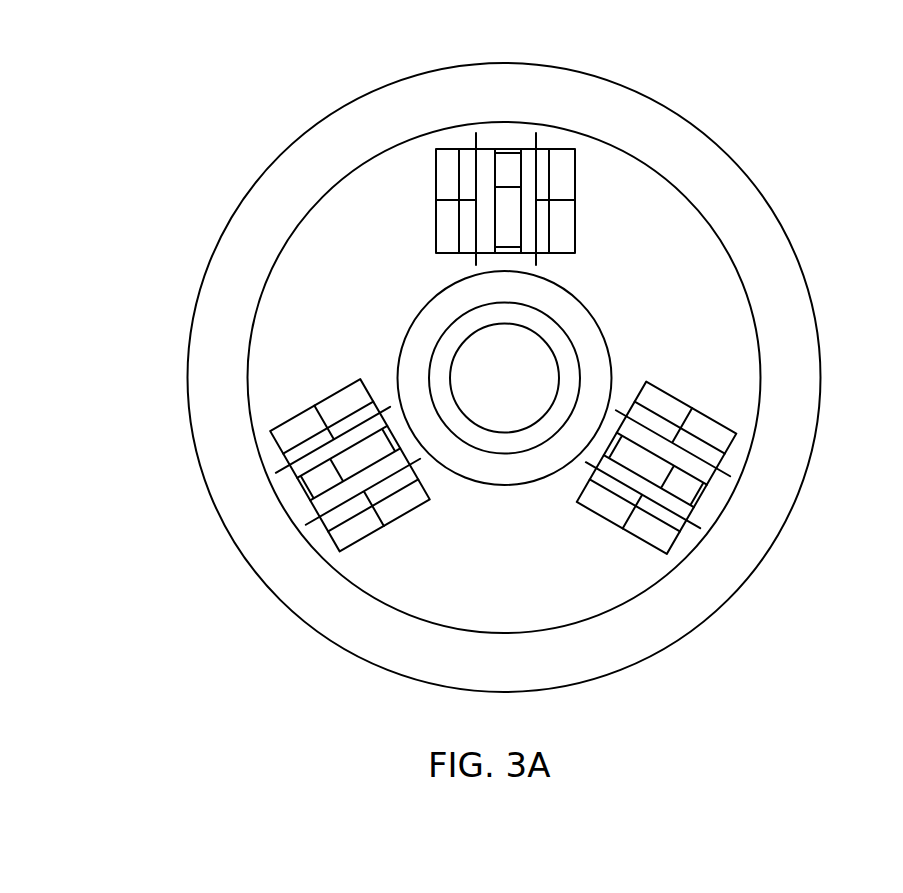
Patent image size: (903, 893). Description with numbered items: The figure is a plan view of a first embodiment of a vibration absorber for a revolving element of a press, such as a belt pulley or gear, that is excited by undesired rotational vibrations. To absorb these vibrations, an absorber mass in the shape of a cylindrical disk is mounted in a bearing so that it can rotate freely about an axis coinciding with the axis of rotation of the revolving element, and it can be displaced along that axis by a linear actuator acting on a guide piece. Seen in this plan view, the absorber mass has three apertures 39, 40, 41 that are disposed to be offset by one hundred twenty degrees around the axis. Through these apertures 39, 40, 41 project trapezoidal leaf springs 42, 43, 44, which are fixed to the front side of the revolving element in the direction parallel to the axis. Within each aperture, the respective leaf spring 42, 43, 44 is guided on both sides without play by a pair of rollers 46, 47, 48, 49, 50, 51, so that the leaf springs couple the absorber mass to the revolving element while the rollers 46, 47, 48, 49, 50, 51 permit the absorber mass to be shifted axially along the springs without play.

The aperture 39 is at (436, 177).
The aperture 40 is at (322, 449).
The aperture 41 is at (683, 553).
The trapezoidal leaf spring 42 is at (505, 172).
The trapezoidal leaf spring 43 is at (325, 485).
The trapezoidal leaf spring 44 is at (700, 487).
The roller 46 is at (575, 200).
The roller 47 is at (436, 200).
The roller 48 is at (335, 442).
The roller 49 is at (367, 493).
The roller 50 is at (635, 495).
The roller 51 is at (675, 441).